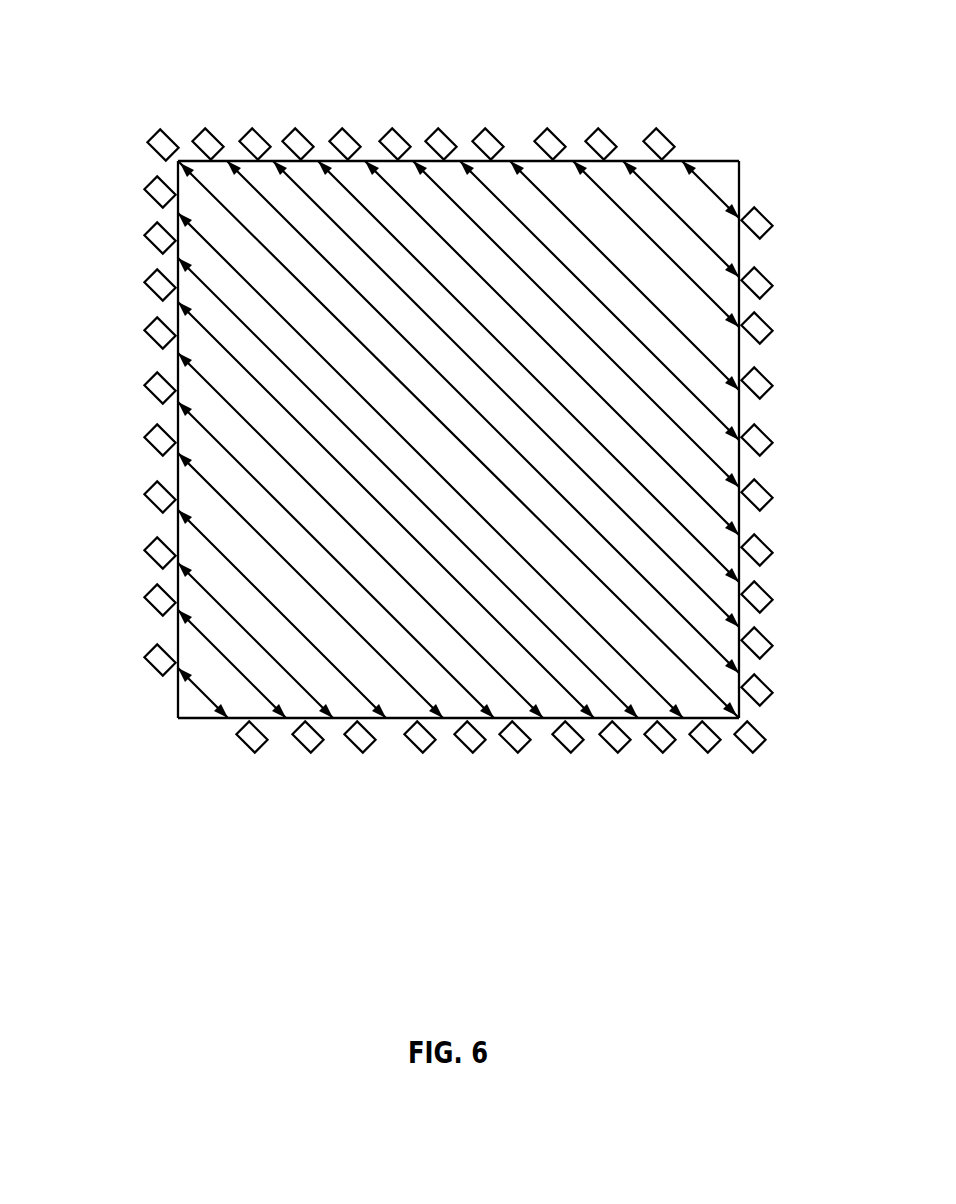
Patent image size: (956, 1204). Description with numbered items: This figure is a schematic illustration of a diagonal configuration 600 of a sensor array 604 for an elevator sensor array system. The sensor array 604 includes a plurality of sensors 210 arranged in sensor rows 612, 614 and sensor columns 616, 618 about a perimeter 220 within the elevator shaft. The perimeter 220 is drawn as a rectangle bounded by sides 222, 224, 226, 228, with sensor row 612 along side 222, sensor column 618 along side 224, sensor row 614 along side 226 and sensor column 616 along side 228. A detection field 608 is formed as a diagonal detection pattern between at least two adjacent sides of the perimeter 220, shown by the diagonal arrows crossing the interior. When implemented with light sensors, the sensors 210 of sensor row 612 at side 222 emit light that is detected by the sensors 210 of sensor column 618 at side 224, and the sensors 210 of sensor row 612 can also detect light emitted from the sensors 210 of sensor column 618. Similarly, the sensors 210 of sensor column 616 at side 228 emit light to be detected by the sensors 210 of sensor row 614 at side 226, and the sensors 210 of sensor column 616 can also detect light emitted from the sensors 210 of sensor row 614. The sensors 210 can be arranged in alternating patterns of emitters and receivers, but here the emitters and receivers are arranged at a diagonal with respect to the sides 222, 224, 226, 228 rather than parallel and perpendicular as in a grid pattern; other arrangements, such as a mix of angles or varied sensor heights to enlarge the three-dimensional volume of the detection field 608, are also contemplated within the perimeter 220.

The diagonal configuration 600 is at (450, 425).
The sensor array 604 is at (125, 113).
The detection field 608 is at (355, 413).
The sensor row 612 is at (368, 92).
The sensor row 614 is at (320, 752).
The sensor column 616 is at (130, 237).
The sensor column 618 is at (823, 348).
The sensor 210 is at (450, 432).
The perimeter 220 is at (445, 451).
The side 222 is at (690, 160).
The side 224 is at (740, 193).
The side 226 is at (200, 718).
The side 228 is at (177, 687).